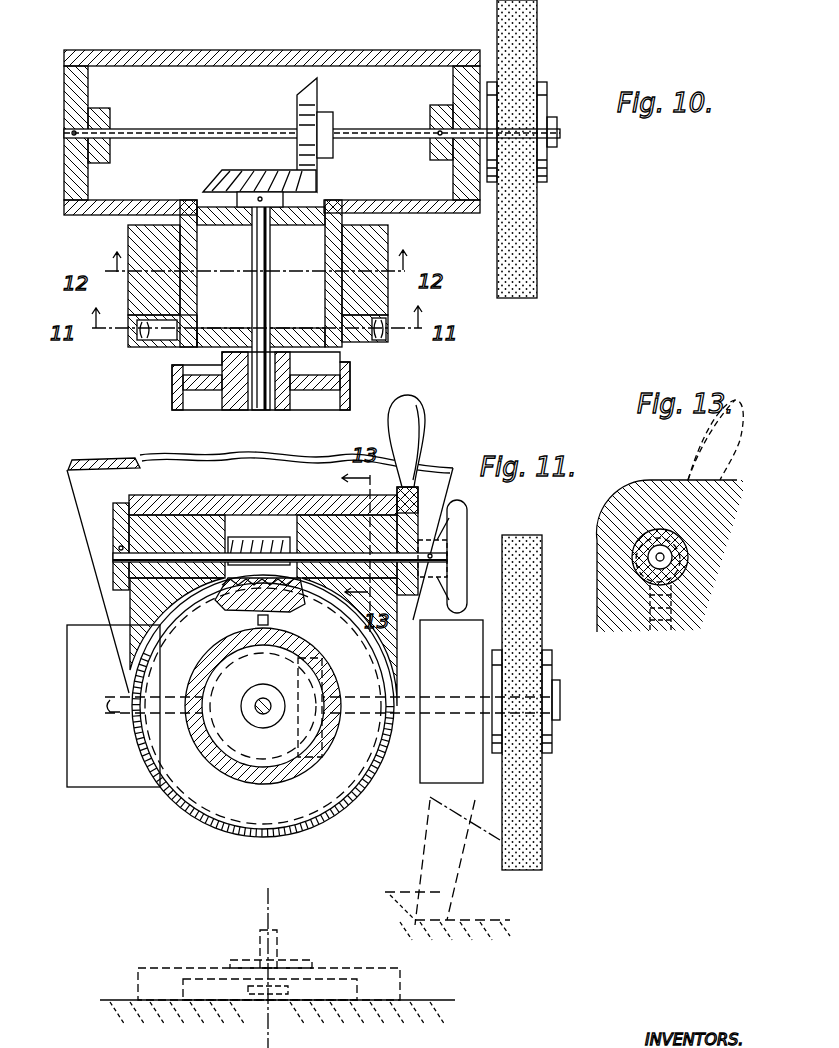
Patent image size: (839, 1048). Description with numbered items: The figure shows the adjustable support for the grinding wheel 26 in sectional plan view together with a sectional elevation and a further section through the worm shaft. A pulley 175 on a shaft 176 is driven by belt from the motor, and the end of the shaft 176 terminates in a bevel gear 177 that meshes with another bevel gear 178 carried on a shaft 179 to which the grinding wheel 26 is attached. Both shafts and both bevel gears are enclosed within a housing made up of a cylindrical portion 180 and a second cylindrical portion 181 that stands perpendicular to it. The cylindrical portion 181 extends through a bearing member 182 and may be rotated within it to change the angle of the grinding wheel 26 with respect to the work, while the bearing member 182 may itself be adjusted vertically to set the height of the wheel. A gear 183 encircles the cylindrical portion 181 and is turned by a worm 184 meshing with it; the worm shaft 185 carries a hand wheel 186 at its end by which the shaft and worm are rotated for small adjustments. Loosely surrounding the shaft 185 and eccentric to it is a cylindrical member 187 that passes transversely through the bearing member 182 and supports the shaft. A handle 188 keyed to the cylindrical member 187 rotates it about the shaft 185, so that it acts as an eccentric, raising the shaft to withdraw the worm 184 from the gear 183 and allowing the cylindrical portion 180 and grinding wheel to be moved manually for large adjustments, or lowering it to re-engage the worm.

In FIG. 10, the grinding wheel 26 is at (530, 38).
In FIG. 11, the grinding wheel 26 is at (526, 702).
In FIG. 10, the pulley 175 is at (352, 390).
In FIG. 10, the shaft 176 is at (268, 300).
In FIG. 10, the bevel gear 177 is at (216, 174).
In FIG. 10, the bevel gear 178 is at (320, 97).
In FIG. 10, the shaft 179 is at (390, 128).
In FIG. 10, the cylindrical portion 180 is at (303, 50).
In FIG. 10, the cylindrical portion 181 is at (178, 345).
In FIG. 10, the bearing member 182 is at (383, 247).
In FIG. 11, the bearing member 182 is at (398, 650).
In FIG. 10, the gear 183 is at (375, 342).
In FIG. 11, the worm 184 is at (263, 537).
In FIG. 11, the worm shaft 185 is at (113, 559).
In FIG. 13, the worm shaft 185 is at (652, 568).
In FIG. 11, the hand wheel 186 is at (460, 528).
In FIG. 11, the cylindrical member 187 is at (118, 546).
In FIG. 13, the cylindrical member 187 is at (640, 532).
In FIG. 11, the handle 188 is at (425, 436).
In FIG. 13, the handle 188 is at (715, 440).